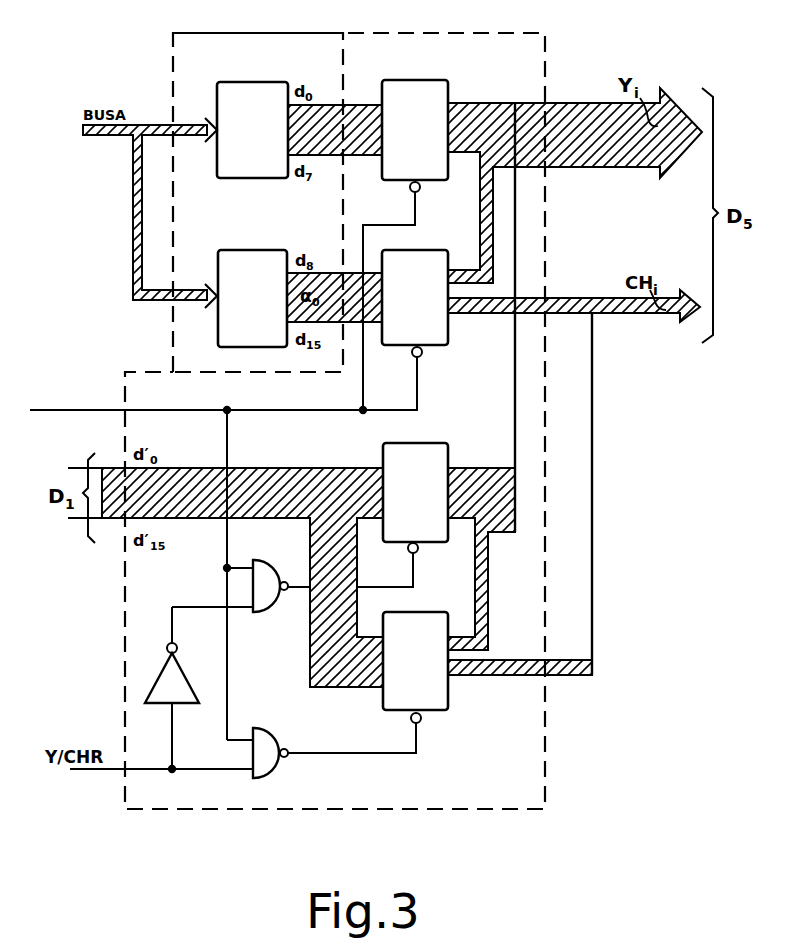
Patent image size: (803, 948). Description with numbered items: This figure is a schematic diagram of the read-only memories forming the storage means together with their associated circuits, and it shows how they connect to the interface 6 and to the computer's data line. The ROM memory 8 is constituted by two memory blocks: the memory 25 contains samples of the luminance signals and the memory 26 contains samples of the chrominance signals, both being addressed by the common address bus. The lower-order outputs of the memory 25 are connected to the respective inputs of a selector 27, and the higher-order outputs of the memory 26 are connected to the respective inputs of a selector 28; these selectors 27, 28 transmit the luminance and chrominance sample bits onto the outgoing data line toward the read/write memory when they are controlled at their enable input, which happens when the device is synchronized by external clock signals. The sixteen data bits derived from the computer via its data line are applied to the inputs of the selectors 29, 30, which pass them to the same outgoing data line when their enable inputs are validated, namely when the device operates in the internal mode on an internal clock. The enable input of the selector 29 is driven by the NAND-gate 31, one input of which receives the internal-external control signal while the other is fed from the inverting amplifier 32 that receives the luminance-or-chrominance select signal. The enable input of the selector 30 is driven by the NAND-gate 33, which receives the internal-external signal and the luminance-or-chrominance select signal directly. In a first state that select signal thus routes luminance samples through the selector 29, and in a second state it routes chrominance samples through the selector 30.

The interface 6 is at (548, 742).
The ROM memory 8 is at (250, 33).
The memory block 25 is at (250, 82).
The memory block 26 is at (250, 250).
The selector 27 is at (450, 90).
The selector 28 is at (418, 250).
The selector 29 is at (425, 443).
The selector 30 is at (415, 612).
The NAND-gate 31 is at (268, 612).
The inverting amplifier 32 is at (186, 703).
The NAND-gate 33 is at (266, 728).